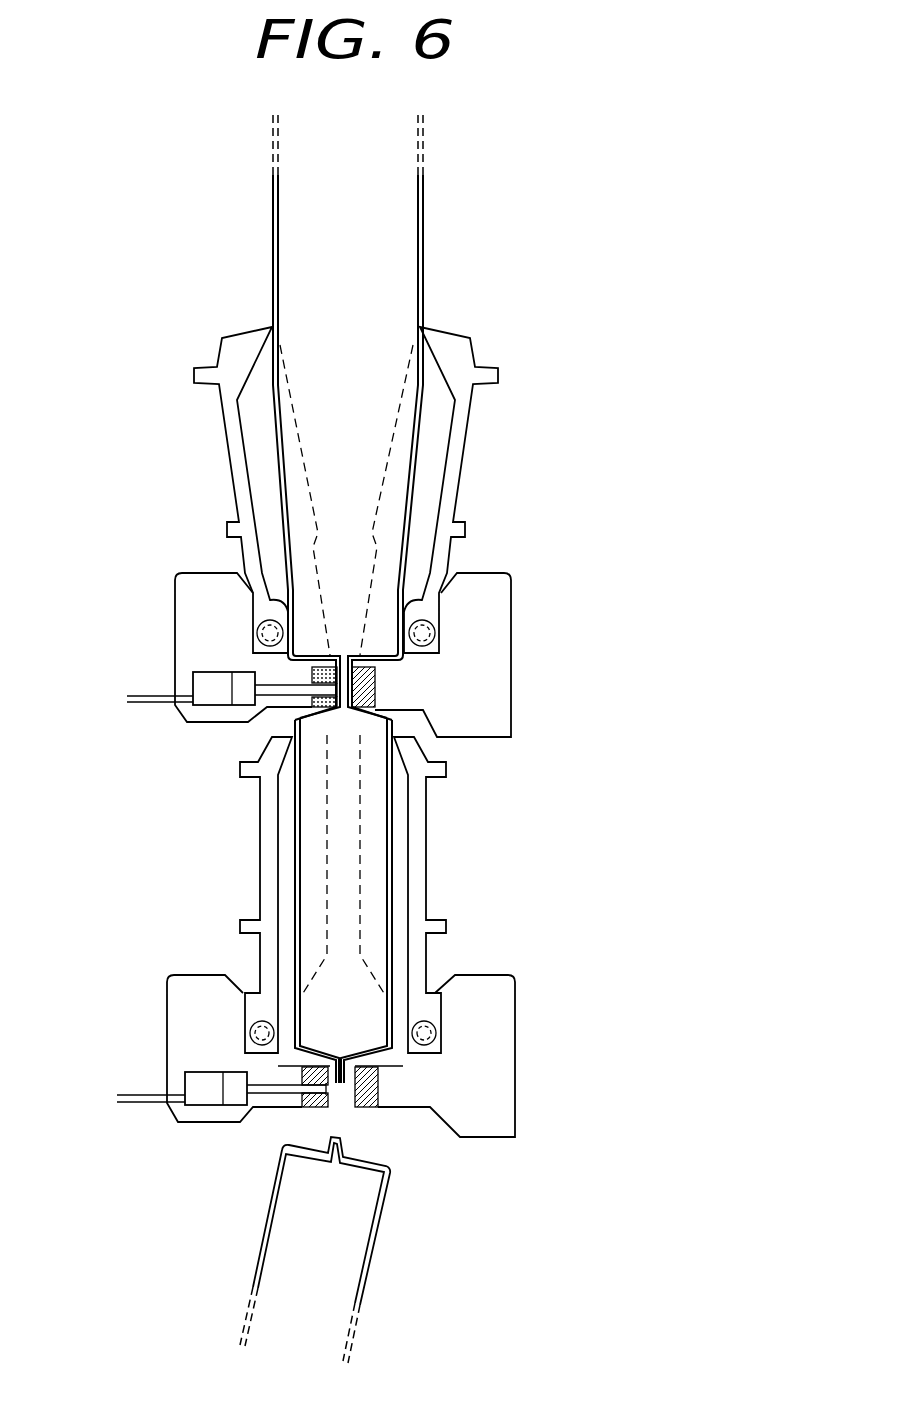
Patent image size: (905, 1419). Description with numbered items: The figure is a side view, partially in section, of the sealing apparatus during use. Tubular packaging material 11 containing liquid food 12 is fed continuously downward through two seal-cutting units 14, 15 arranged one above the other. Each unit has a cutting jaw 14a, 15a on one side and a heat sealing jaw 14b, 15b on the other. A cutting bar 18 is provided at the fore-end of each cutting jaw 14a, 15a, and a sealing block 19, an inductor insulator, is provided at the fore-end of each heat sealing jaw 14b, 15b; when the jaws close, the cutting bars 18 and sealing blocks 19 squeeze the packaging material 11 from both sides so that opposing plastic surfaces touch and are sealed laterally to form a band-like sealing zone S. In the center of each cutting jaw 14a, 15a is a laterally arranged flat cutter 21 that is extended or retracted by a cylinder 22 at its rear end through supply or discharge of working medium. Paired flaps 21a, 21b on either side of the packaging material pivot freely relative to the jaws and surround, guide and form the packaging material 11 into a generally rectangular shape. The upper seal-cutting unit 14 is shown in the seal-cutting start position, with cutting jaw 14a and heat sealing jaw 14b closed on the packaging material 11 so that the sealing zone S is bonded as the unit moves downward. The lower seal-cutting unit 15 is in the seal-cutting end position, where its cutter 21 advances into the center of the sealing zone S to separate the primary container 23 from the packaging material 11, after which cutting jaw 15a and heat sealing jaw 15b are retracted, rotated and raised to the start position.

The packaging material 11 is at (428, 190).
The liquid food 12 is at (393, 278).
The seal-cutting unit 14 is at (335, 615).
The cutting jaw 14a is at (175, 598).
The heat sealing jaw 14b is at (512, 592).
The seal-cutting unit 15 is at (356, 927).
The cutting jaw 15a is at (170, 995).
The heat sealing jaw 15b is at (515, 1020).
The cutting bar 18 is at (325, 663).
The sealing block 19 is at (380, 688).
The cutter 21 is at (272, 695).
The flap 21a is at (213, 343).
The flap 21b is at (477, 348).
The cylinder 22 is at (210, 672).
The primary container 23 is at (382, 1232).
The sealing zone S is at (352, 623).